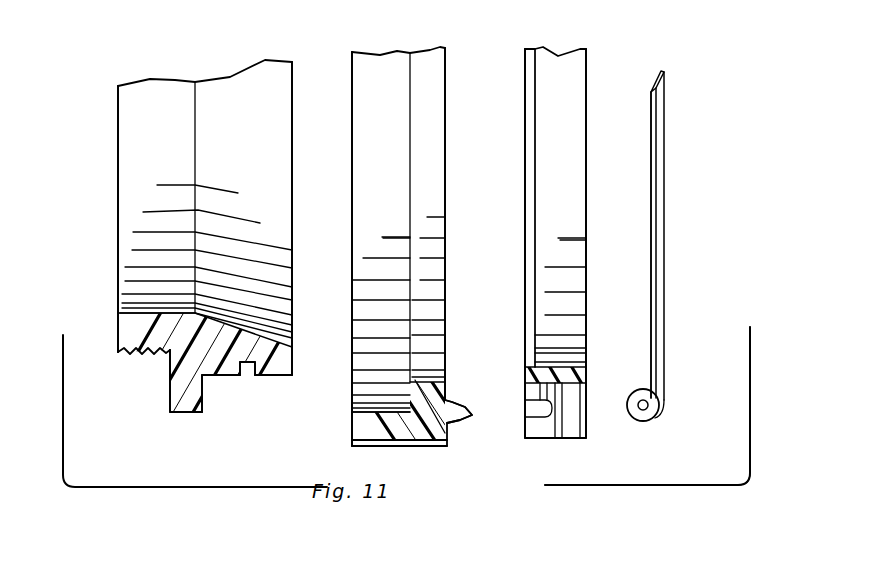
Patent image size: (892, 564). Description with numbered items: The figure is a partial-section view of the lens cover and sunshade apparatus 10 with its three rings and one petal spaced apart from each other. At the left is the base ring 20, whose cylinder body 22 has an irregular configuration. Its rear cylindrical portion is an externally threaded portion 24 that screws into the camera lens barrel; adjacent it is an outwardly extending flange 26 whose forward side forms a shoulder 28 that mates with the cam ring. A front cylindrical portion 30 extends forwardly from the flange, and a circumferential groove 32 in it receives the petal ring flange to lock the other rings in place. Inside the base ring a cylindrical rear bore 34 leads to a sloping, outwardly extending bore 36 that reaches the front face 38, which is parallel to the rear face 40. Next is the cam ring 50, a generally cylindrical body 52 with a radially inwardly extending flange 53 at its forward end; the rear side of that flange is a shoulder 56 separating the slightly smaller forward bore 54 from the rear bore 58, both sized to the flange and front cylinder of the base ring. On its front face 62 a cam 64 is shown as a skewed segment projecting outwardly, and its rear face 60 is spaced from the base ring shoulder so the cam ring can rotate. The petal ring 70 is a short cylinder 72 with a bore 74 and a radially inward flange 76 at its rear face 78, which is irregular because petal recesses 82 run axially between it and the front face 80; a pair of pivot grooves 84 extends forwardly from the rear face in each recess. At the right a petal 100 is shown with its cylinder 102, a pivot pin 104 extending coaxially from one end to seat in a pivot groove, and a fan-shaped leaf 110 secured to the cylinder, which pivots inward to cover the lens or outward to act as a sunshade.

The lens cover and sunshade apparatus 10 is at (688, 295).
The base ring 20 is at (142, 78).
The cylinder body 22 is at (123, 328).
The externally threaded portion 24 is at (137, 355).
The flange 26 is at (178, 417).
The shoulder 28 is at (202, 398).
The front cylindrical portion 30 is at (277, 377).
The groove 32 is at (243, 375).
The rear bore 34 is at (122, 248).
The sloping bore 36 is at (222, 82).
The front face 38 is at (290, 70).
The rear face 40 is at (118, 130).
The cam ring 50 is at (397, 42).
The cylindrical body 52 is at (373, 450).
The radially inwardly extending flange 53 is at (443, 385).
The forward bore 54 is at (437, 153).
The shoulder 56 is at (413, 385).
The rear bore 58 is at (355, 53).
The rear face 60 is at (353, 420).
The front face 62 is at (445, 63).
The cam 64 is at (453, 425).
The petal ring 70 is at (547, 43).
The cylinder 72 is at (580, 367).
The bore 74 is at (580, 300).
The flange 76 is at (523, 127).
The rear face 78 is at (523, 220).
The front face 80 is at (585, 230).
The petal recess 82 is at (587, 420).
The pivot groove 84 is at (528, 410).
The petal 100 is at (647, 72).
The cylinder 102 is at (640, 423).
The pivot pin 104 is at (633, 397).
The leaf 110 is at (652, 135).